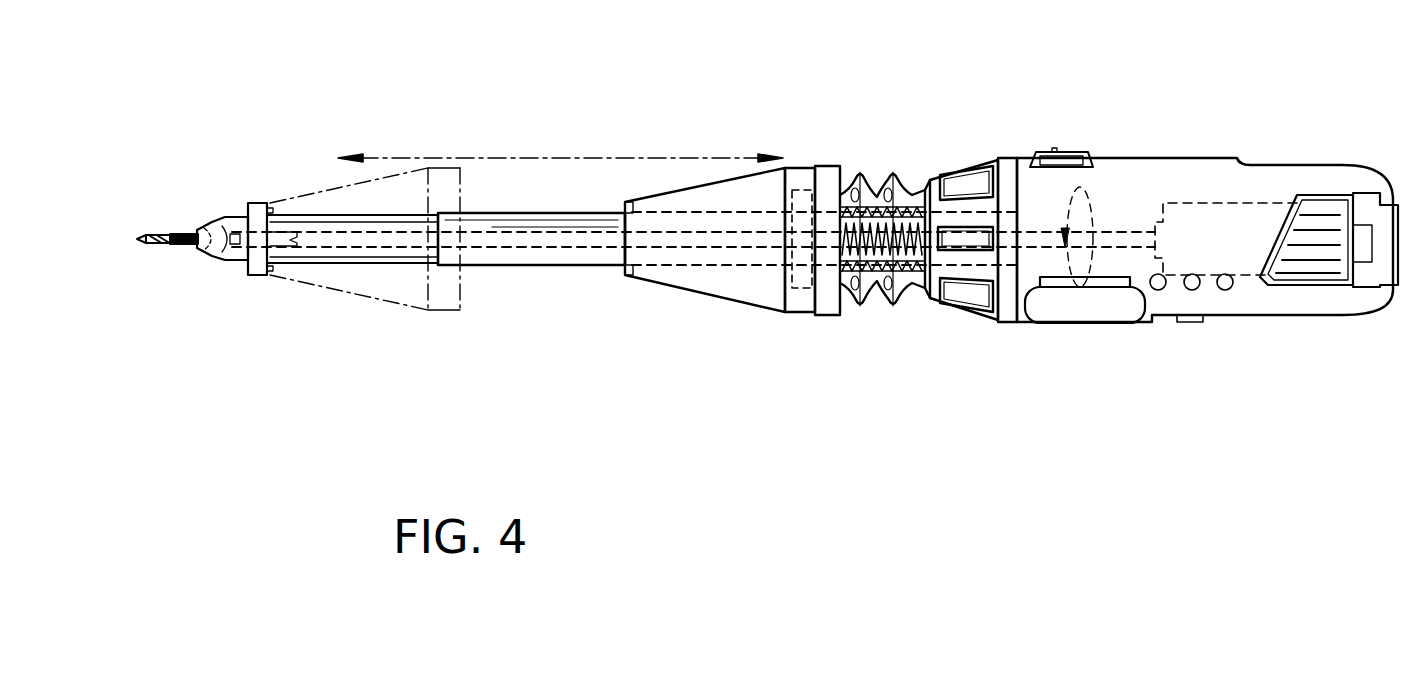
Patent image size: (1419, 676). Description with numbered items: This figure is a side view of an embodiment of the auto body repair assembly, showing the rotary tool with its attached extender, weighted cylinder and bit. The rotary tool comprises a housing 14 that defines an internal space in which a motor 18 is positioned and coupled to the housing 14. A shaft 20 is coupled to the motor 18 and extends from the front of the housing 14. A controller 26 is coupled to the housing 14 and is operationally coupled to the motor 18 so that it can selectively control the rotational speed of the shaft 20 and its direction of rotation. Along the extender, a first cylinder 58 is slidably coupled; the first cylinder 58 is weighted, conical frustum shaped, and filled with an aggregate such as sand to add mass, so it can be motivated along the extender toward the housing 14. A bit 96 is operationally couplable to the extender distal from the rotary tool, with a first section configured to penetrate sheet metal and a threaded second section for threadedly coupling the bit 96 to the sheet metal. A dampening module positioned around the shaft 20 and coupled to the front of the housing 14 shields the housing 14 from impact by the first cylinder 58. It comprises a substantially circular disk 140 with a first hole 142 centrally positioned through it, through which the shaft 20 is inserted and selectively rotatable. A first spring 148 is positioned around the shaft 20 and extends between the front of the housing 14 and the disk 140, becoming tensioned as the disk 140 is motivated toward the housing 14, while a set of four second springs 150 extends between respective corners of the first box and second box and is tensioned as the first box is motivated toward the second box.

The housing 14 is at (1153, 158).
The motor 18 is at (1223, 233).
The shaft 20 is at (1122, 240).
The controller 26 is at (1050, 165).
The first cylinder 58 is at (733, 182).
The bit 96 is at (175, 240).
The disk 140 is at (840, 165).
The first hole 142 is at (832, 233).
The first spring 148 is at (877, 168).
The second springs 150 is at (908, 180).